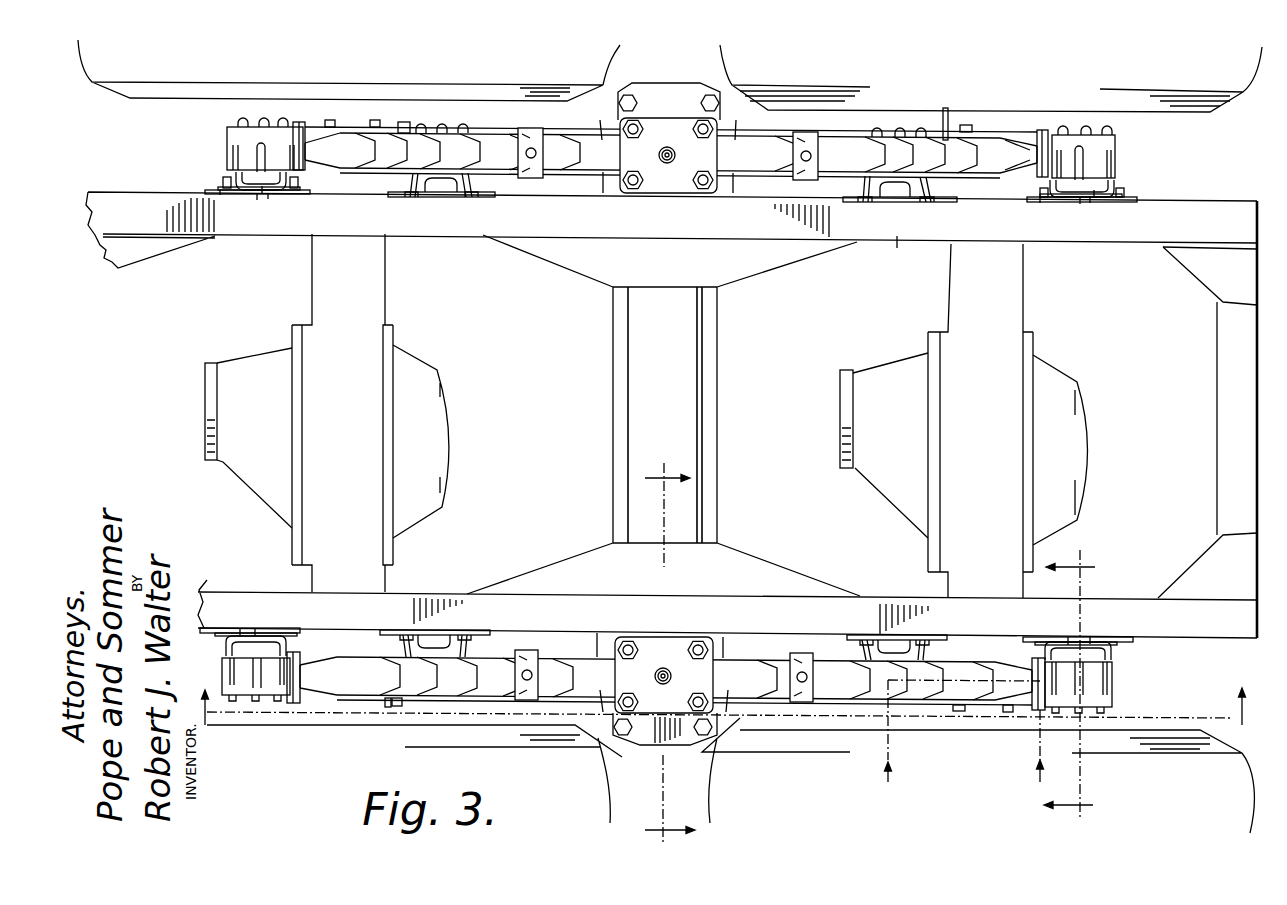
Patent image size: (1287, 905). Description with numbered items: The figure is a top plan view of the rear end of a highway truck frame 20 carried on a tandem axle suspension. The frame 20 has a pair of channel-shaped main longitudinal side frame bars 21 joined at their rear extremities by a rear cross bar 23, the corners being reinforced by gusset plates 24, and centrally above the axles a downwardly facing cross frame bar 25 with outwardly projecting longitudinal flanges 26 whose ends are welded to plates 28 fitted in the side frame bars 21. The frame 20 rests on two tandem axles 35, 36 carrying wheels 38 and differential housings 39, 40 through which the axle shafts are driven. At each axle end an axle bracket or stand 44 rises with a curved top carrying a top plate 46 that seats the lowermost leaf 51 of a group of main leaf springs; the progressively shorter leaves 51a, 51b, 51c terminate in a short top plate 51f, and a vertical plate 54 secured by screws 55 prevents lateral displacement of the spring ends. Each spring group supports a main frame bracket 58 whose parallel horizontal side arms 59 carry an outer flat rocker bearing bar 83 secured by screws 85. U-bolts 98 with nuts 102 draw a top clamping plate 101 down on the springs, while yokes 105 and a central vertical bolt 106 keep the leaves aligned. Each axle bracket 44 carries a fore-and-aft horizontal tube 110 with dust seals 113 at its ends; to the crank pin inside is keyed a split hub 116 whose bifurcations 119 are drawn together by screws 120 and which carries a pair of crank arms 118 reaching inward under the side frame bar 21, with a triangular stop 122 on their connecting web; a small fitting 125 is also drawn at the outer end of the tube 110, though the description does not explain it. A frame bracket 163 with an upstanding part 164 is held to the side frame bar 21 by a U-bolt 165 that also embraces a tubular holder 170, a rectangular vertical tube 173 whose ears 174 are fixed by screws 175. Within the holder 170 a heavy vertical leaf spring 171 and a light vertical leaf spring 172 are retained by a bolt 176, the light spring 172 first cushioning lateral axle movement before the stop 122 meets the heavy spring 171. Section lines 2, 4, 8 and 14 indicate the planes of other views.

The section line 2- 2 is at (724, 720).
The section line 4- 4 is at (670, 651).
The section line 8- 8 is at (1072, 686).
The section line 14- 14 is at (946, 735).
The frame 20 is at (1210, 196).
The main longitudinal side frame bars 21 is at (898, 598).
The rear cross bar 23 is at (1217, 378).
The gusset plates 24 is at (1200, 274).
The cross frame bar 25 is at (662, 415).
The longitudinal flanges 26 is at (611, 400).
The plate 28 is at (766, 262).
The tandem axle 35 is at (388, 297).
The tandem axle 36 is at (944, 313).
The wheels 38 is at (116, 94).
The differential housing 39 is at (448, 430).
The differential housing 40 is at (1080, 429).
The axle bracket or stand 44 is at (320, 170).
The top plate 46 is at (1027, 138).
The lowermost leaf 51 is at (669, 416).
The spring leaf 51a is at (670, 419).
The spring leaf 51b is at (667, 416).
The spring leaf 51c is at (666, 416).
The top plate 51f is at (674, 416).
The vertical plate 54 is at (360, 120).
The screws 55 is at (330, 120).
The main frame bracket 58 is at (670, 419).
The horizontal side arms 59 is at (606, 131).
The outer flat rocker bearing bar 83 is at (632, 88).
The screws 85 is at (710, 94).
The bolts 98 is at (633, 171).
The top clamping plate 101 is at (665, 195).
The nuts 102 is at (693, 130).
The yokes 105 is at (531, 129).
The central vertical bolt 106 is at (667, 164).
The horizontal tube 110 is at (945, 108).
The dust seals 113 is at (300, 122).
The split hub 116 is at (227, 136).
The crank arms 118 is at (233, 155).
The bifurcations 119 is at (262, 121).
The screws 120 is at (238, 124).
The triangular stop 122 is at (261, 148).
The bracket 125 is at (404, 122).
The frame bracket 163 is at (483, 200).
The upstanding part 164 is at (433, 198).
The U-bolt 165 is at (1118, 184).
The tubular holder 170 is at (206, 191).
The heavy vertical leaf spring 171 is at (258, 194).
The light vertical leaf spring 172 is at (268, 192).
The vertical tube 173 is at (281, 190).
The ears 174 is at (221, 195).
The screw 175 is at (225, 188).
The bolt 176 is at (260, 190).